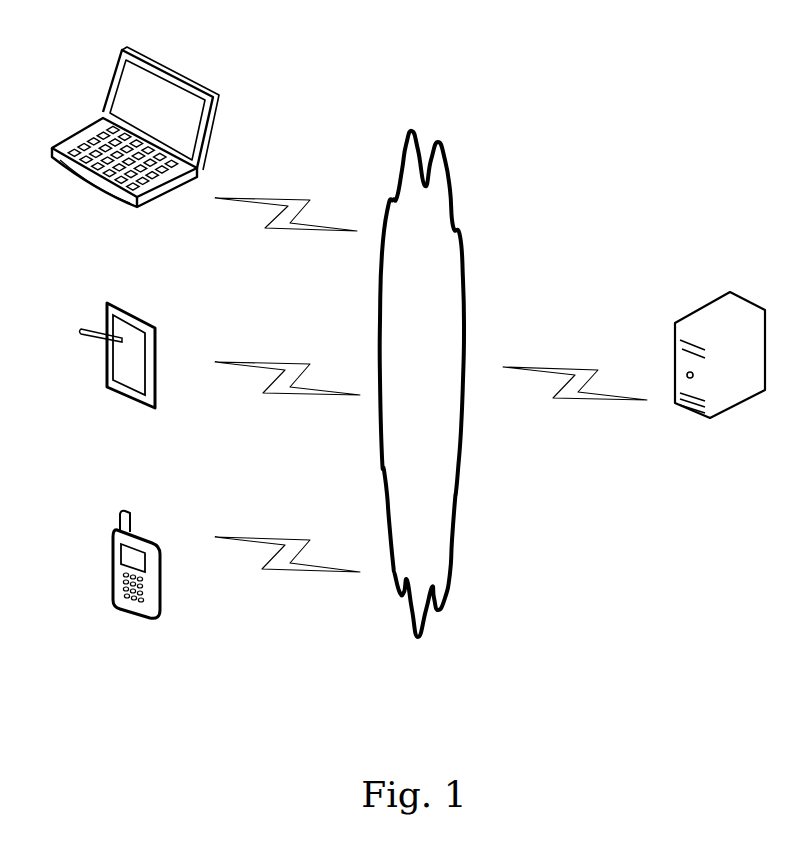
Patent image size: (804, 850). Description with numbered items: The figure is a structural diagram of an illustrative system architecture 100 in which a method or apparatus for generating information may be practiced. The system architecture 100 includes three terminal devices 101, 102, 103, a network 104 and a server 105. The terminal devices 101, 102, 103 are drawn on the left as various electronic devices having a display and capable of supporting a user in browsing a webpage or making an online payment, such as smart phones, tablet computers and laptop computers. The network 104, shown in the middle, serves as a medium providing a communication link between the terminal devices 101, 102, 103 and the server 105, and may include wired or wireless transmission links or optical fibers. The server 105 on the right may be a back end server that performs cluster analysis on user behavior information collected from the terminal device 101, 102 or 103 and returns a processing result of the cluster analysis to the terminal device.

The system architecture 100 is at (675, 40).
The terminal device 101 is at (137, 584).
The terminal device 102 is at (118, 376).
The terminal device 103 is at (135, 148).
The network 104 is at (422, 384).
The server 105 is at (720, 380).